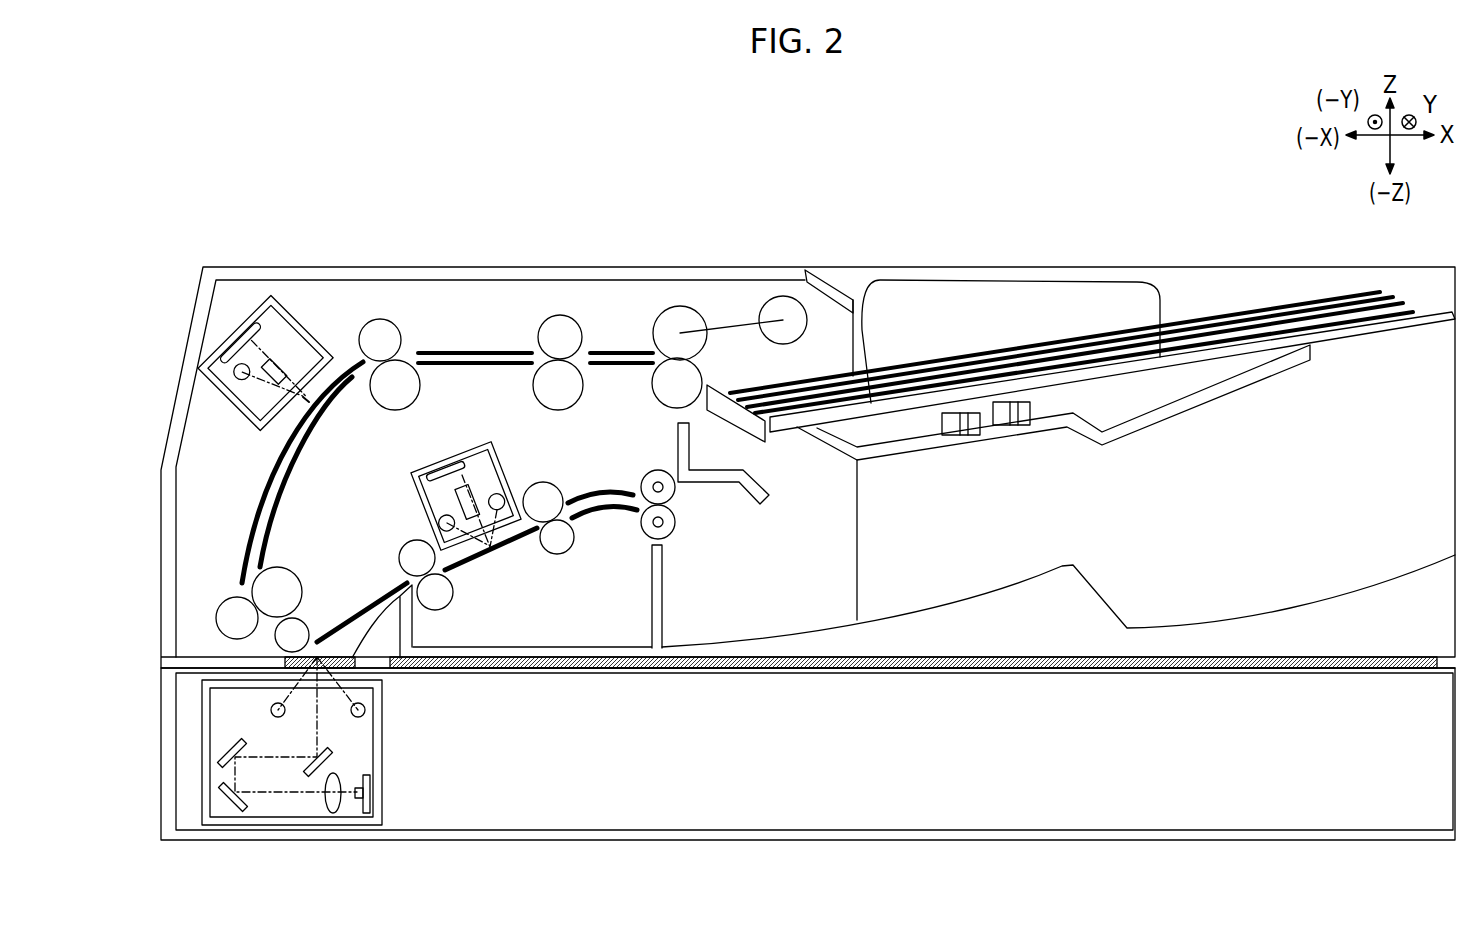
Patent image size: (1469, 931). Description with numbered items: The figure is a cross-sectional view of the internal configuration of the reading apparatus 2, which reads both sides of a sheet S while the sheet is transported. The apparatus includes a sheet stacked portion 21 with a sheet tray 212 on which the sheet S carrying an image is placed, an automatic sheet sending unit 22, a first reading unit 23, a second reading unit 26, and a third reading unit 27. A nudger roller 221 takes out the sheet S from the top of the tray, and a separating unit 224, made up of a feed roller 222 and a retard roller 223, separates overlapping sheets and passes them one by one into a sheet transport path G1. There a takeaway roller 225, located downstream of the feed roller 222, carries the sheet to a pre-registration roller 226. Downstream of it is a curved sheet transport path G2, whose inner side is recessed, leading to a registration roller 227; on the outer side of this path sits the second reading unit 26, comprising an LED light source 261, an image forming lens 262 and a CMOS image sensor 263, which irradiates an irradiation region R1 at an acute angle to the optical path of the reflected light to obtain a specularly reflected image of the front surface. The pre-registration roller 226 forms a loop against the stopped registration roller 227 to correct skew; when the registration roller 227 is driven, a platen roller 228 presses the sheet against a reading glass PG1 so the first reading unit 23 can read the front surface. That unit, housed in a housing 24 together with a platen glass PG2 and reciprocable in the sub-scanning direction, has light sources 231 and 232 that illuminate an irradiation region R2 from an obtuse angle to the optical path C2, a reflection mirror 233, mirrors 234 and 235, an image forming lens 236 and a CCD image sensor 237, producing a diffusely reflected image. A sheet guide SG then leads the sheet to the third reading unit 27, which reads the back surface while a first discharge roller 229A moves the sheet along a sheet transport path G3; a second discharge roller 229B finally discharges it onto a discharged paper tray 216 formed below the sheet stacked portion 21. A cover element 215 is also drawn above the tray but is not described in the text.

The reading apparatus 2 is at (242, 167).
The sheet stacked portion 21 is at (1081, 399).
The sheet tray 212 is at (1195, 360).
The cover 215 is at (981, 310).
The discharged paper tray 216 is at (1267, 626).
The automatic sheet sending unit 22 is at (355, 488).
The nudger roller 221 is at (780, 312).
The feed roller 222 is at (662, 318).
The retard roller 223 is at (673, 387).
The separating unit 224 is at (671, 346).
The takeaway roller 225 is at (533, 323).
The pre-registration roller 226 is at (382, 317).
The registration roller 227 is at (233, 596).
The platen roller 228 is at (292, 632).
The first discharge roller 229A is at (538, 551).
The second discharge roller 229B is at (634, 517).
The first reading unit 23 is at (295, 770).
The light source 231 is at (366, 712).
The light source 232 is at (271, 710).
The reflection mirror 233 is at (324, 762).
The mirror 234 is at (226, 751).
The mirror 235 is at (228, 796).
The image forming lens 236 is at (333, 800).
The image sensor 237 is at (357, 803).
The housing 24 is at (500, 834).
The second reading unit 26 is at (234, 338).
The light source 261 is at (241, 371).
The image forming lens 262 is at (273, 371).
The image sensor 263 is at (240, 342).
The third reading unit 27 is at (443, 452).
The optical path C2 is at (295, 735).
The sheet transport path G1 is at (495, 351).
The sheet transport path G2 is at (252, 484).
The sheet transport path G3 is at (500, 553).
The irradiation region R1 is at (307, 403).
The irradiation region R2 is at (317, 650).
The reading glass PG1 is at (307, 663).
The platen glass PG2 is at (1000, 666).
The sheet S is at (1170, 326).
The sheet guide SG is at (378, 647).